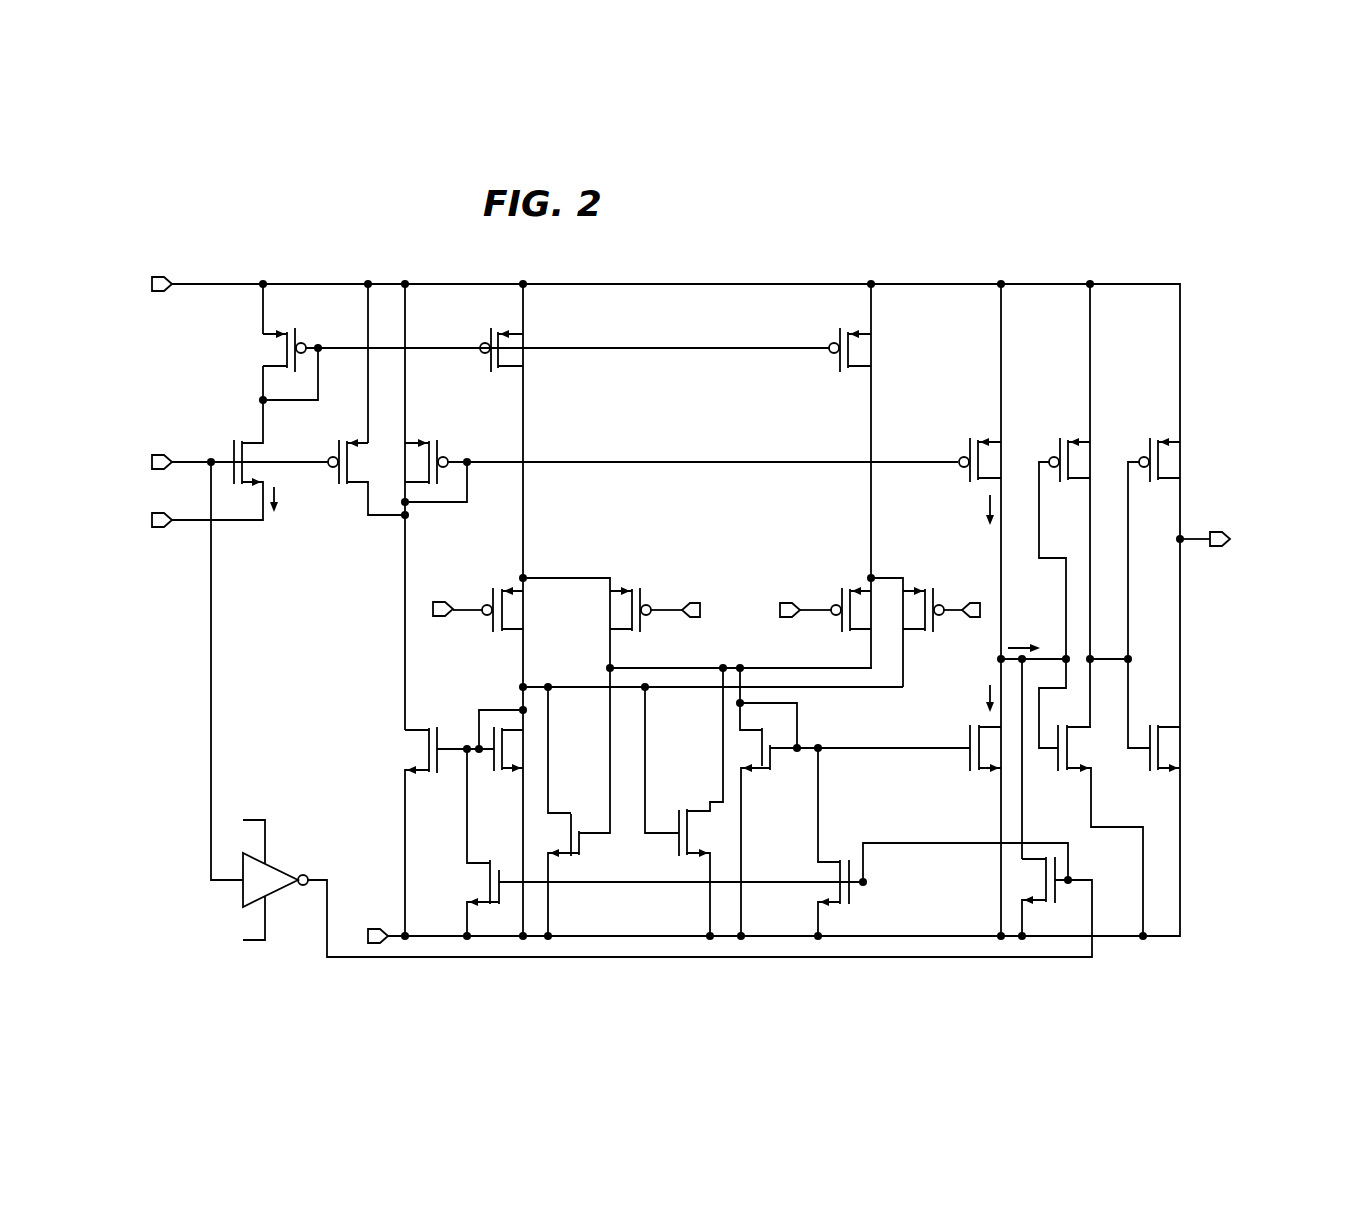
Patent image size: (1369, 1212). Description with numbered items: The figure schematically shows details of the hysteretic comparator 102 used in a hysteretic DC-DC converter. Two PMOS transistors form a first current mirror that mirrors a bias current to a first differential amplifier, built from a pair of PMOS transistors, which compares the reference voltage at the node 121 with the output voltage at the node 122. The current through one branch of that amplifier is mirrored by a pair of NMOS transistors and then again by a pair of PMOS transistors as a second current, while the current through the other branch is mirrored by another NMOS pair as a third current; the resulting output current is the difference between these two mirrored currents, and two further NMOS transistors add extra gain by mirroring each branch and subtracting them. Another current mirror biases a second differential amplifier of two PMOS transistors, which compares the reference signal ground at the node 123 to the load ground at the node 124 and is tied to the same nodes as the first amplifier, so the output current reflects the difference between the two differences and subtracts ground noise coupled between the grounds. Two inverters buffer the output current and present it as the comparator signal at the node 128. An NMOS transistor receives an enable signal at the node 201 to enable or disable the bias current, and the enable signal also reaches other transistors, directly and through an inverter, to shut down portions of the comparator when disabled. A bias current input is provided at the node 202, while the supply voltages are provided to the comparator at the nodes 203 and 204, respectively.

The hysteretic comparator 102 is at (764, 247).
The node 203 is at (162, 277).
The node 201 is at (162, 455).
The bias current Ipbias terminal 202 is at (162, 528).
The node 204 is at (376, 929).
The node 121 is at (443, 601).
The node 122 is at (691, 601).
The node 123 is at (787, 601).
The node 124 is at (966, 601).
The node 128 is at (1216, 548).